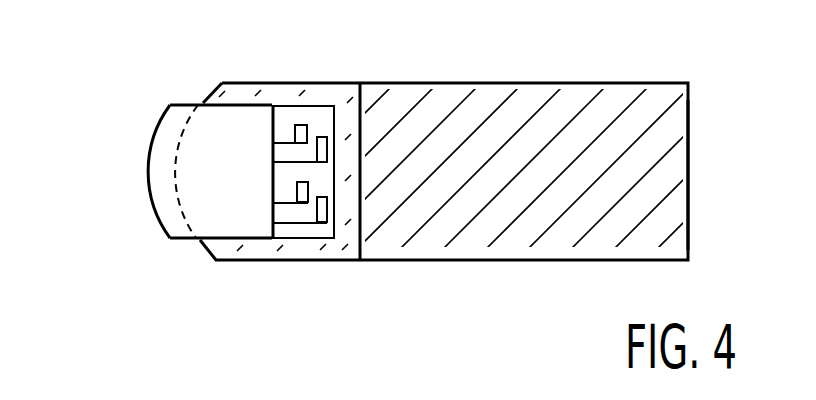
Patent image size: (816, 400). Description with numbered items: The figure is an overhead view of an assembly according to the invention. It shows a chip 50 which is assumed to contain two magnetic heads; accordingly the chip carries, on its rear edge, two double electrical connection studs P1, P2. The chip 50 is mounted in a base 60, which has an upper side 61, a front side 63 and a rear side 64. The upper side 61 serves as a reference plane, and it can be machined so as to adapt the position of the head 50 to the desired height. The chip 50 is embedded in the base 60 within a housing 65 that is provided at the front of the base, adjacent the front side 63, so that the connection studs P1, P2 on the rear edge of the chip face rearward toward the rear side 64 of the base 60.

The chip 50 is at (132, 203).
The base 60 is at (573, 83).
The upper side 61 is at (472, 205).
The front side 63 is at (203, 248).
The rear side 64 is at (688, 167).
The housing 65 is at (325, 103).
The double electrical connection stud P1 is at (322, 221).
The double electrical connection stud P2 is at (315, 138).